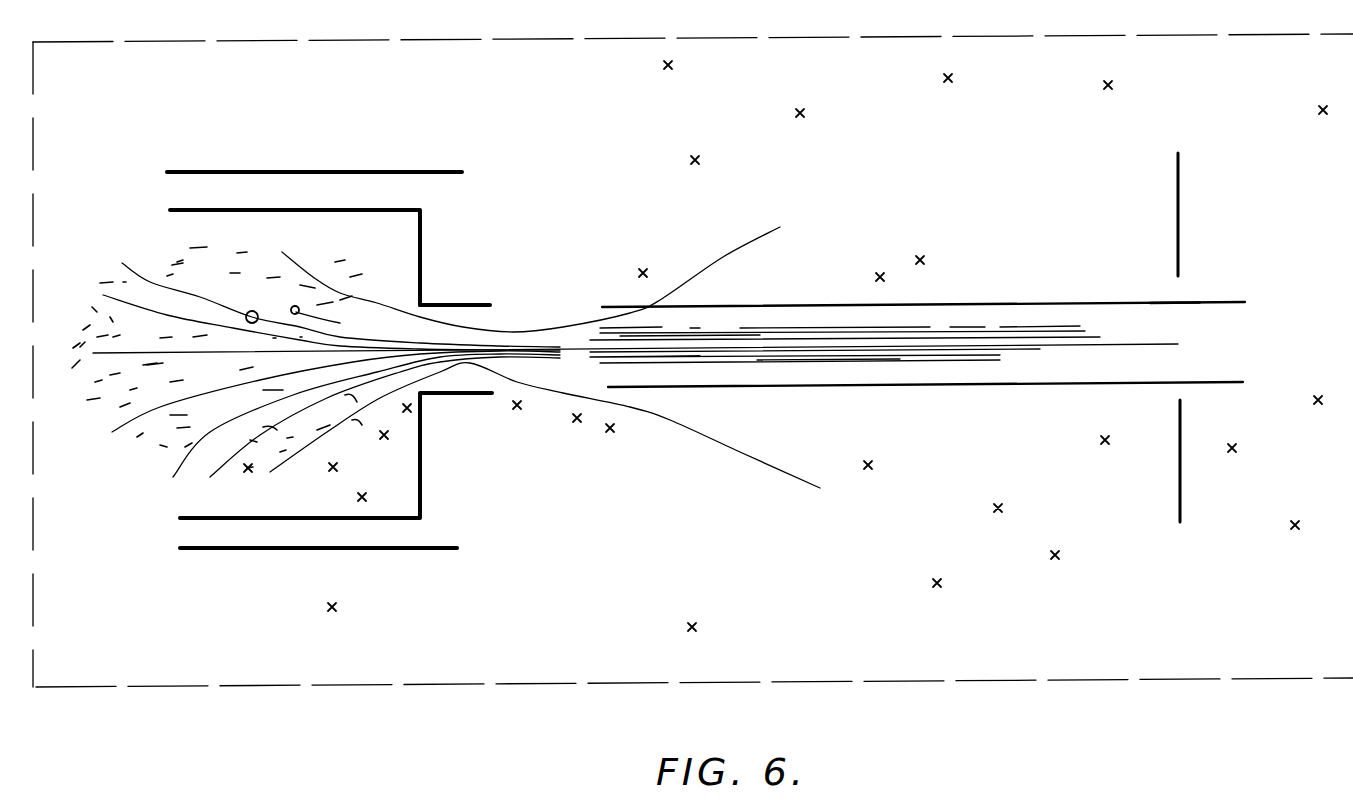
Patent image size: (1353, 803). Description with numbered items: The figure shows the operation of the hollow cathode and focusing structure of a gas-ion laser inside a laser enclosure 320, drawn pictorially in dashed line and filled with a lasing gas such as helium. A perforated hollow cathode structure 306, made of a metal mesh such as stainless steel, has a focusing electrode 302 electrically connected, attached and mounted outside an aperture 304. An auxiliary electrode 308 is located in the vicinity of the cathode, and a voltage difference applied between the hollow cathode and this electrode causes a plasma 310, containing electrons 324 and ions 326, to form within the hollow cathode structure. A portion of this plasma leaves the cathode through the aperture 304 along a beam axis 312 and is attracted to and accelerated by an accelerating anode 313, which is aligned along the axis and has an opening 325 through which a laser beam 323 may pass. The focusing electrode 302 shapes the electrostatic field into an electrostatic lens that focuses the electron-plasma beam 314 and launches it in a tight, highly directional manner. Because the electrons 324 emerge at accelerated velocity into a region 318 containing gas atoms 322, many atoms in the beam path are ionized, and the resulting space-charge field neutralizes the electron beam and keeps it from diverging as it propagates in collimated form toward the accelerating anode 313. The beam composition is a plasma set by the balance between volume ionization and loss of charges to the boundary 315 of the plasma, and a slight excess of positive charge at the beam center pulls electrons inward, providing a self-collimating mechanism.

The focusing electrode 302 is at (472, 304).
The aperture 304 is at (430, 360).
The perforated hollow cathode structure 306 is at (422, 238).
The auxiliary electrode 308 is at (416, 170).
The plasma 310 is at (115, 392).
The beam axis 312 is at (200, 354).
The accelerating anode 313 is at (1180, 220).
The electron-plasma beam 314 is at (713, 348).
The boundary of the plasma 315 is at (700, 328).
The region 318 is at (648, 244).
The laser enclosure 320 is at (343, 687).
The gas atoms 322 is at (887, 272).
The laser beam 323 is at (1227, 303).
The electrons 324 is at (296, 306).
The opening 325 is at (1178, 289).
The ions 326 is at (252, 311).